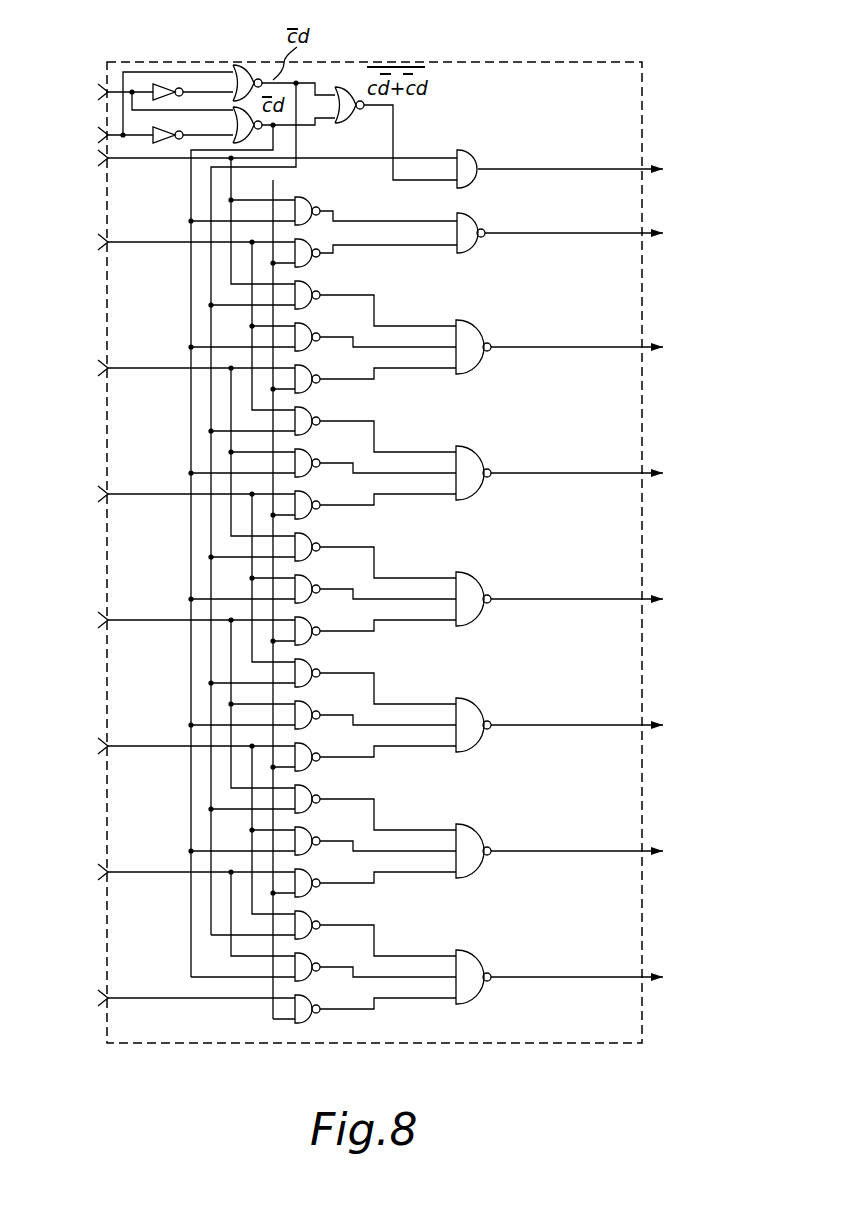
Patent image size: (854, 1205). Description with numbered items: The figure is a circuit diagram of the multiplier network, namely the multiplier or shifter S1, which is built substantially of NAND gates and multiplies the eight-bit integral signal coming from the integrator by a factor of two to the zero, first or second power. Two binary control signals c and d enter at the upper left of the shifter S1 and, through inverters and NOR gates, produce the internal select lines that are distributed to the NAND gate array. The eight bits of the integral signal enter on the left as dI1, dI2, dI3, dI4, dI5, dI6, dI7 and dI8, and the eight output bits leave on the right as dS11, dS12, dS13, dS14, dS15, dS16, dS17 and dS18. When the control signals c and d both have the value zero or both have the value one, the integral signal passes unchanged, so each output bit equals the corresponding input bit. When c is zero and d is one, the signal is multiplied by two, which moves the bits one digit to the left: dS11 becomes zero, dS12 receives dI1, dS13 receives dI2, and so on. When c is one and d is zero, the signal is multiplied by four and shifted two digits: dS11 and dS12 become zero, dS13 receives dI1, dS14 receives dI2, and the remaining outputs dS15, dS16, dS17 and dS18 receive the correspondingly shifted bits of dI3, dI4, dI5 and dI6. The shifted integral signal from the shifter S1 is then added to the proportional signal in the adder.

The multiplier (shifter) S1 is at (488, 62).
The binary control signal c is at (155, 95).
The binary control signal d is at (155, 109).
The integral signal bit dI1 is at (257, 213).
The integral signal bit dI2 is at (176, 318).
The integral signal bit dI3 is at (176, 444).
The integral signal bit dI4 is at (176, 570).
The integral signal bit dI5 is at (176, 696).
The integral signal bit dI6 is at (176, 822).
The integral signal bit dI7 is at (176, 906).
The integral signal bit dI8 is at (176, 1001).
The shifter output bit dS11 is at (586, 166).
The shifter output bit dS12 is at (517, 230).
The shifter output bit dS13 is at (517, 337).
The shifter output bit dS14 is at (517, 463).
The shifter output bit dS15 is at (517, 589).
The shifter output bit dS16 is at (517, 715).
The shifter output bit dS17 is at (518, 841).
The shifter output bit dS18 is at (517, 967).